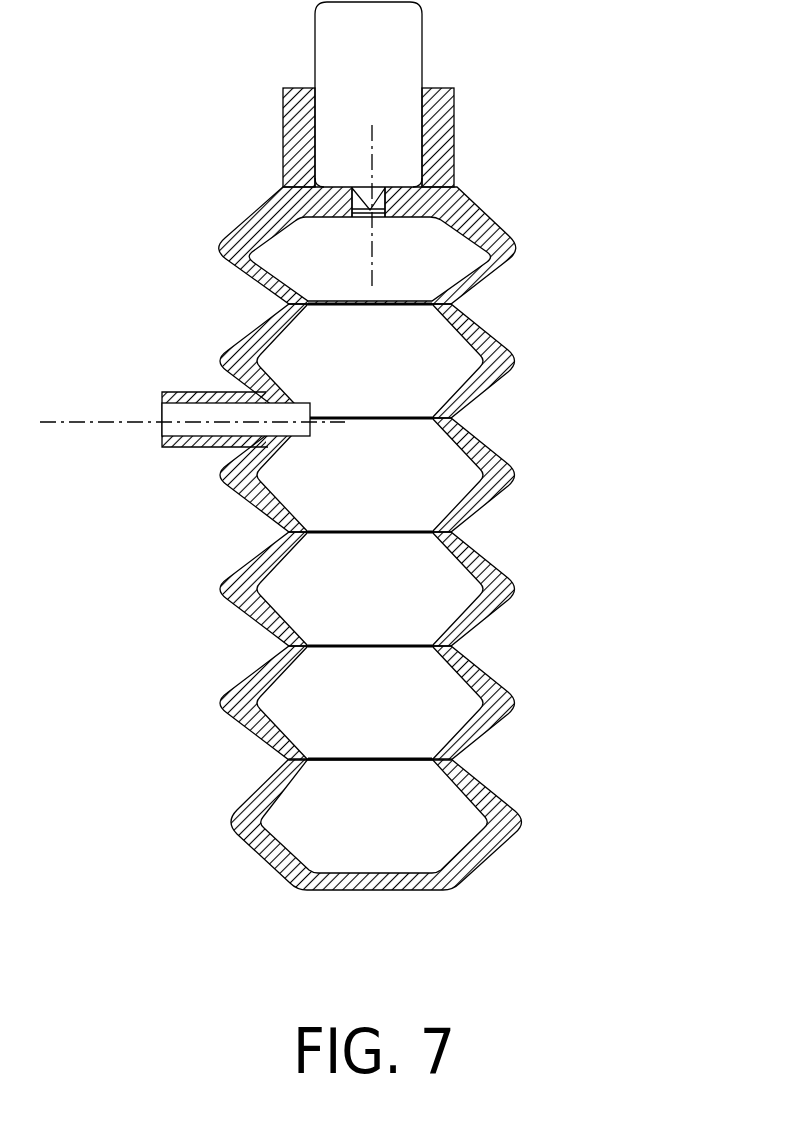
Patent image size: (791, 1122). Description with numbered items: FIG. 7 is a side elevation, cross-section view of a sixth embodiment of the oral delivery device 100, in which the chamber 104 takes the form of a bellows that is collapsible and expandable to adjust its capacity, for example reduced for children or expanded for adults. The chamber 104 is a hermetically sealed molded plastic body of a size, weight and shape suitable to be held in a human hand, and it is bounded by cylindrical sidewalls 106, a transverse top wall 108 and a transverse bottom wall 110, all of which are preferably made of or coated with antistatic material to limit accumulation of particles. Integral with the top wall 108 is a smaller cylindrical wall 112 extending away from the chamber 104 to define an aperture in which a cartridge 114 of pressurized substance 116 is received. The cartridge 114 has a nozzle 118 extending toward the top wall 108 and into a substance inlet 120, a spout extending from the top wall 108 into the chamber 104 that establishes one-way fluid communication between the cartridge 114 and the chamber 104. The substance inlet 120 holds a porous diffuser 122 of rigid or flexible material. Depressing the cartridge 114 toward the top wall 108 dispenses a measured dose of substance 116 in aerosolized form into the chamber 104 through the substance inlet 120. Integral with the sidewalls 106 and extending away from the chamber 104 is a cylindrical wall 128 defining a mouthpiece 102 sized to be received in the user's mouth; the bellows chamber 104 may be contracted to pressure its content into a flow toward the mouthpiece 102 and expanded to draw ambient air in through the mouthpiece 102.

The bellows assembly 100 is at (155, 203).
The mouthpiece 102 is at (212, 450).
The chamber 104 is at (497, 343).
The cylindrical sidewalls 106 is at (483, 510).
The transverse top wall 108 is at (467, 195).
The transverse bottom wall 110 is at (402, 884).
The cylindrical wall 112 is at (283, 120).
The cartridge 114 is at (423, 16).
The pressurized substance 116 is at (388, 104).
The nozzle 118 is at (373, 188).
The substance inlet 120 is at (356, 213).
The diffuser 122 is at (373, 213).
The cylindrical wall 128 is at (203, 394).